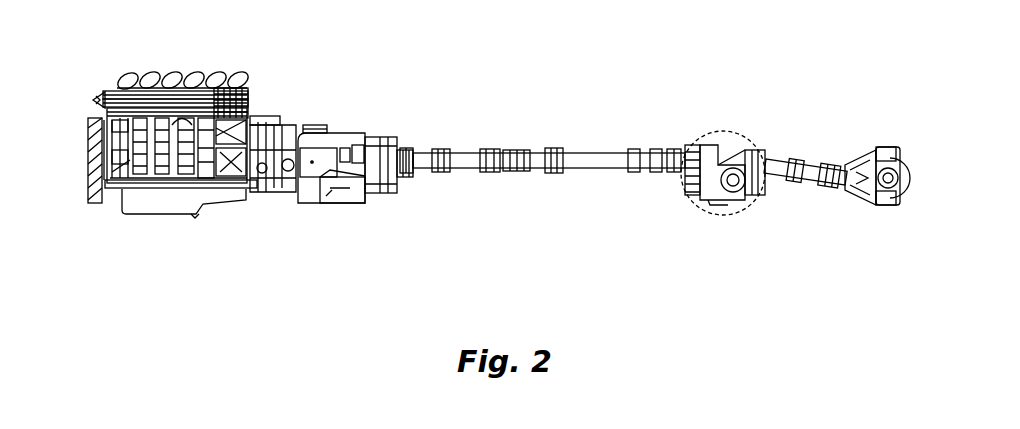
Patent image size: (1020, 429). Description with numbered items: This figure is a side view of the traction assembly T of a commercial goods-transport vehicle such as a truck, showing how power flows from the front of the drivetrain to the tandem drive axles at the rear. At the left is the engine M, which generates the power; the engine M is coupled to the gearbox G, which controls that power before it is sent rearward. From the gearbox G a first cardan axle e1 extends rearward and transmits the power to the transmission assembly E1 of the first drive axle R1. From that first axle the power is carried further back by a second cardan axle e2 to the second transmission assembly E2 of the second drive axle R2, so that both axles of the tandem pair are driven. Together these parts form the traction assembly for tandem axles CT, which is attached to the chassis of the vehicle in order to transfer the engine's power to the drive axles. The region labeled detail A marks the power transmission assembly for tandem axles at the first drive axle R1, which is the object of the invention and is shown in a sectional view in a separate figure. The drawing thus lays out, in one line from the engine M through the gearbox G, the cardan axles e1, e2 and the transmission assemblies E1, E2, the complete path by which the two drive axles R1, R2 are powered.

The engine M is at (136, 79).
The traction assembly T is at (284, 90).
The gearbox G is at (355, 183).
The traction assembly for tandem axles CT is at (820, 97).
The first cardan axle e1 is at (556, 152).
The transmission assembly E1 is at (662, 212).
The first drive axle R1 is at (736, 150).
The detail A is at (758, 150).
The second cardan axle e2 is at (802, 162).
The second transmission assembly E2 is at (850, 203).
The second drive axle R2 is at (881, 148).